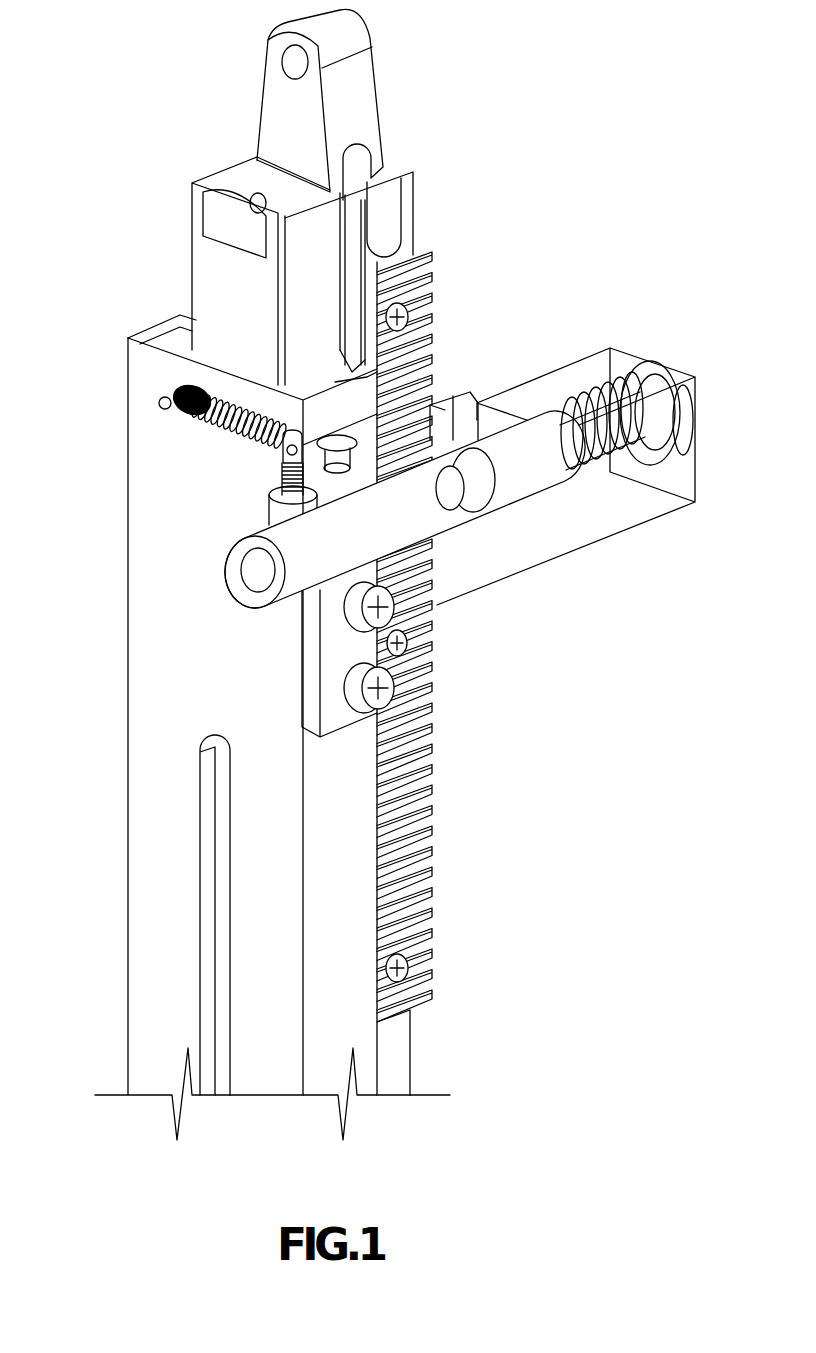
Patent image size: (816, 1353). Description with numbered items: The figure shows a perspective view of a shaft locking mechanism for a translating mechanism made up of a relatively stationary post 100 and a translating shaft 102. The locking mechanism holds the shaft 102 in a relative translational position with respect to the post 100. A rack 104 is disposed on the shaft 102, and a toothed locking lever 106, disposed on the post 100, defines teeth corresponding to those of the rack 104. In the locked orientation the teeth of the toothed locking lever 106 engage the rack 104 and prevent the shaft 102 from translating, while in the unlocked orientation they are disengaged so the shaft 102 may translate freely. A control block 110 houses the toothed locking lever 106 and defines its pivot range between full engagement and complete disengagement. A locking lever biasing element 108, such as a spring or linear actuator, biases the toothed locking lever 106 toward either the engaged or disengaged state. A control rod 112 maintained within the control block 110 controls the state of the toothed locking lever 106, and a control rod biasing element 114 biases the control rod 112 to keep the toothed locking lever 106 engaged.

The post 100 is at (140, 716).
The translating shaft 102 is at (360, 88).
The rack 104 is at (427, 768).
The toothed locking lever 106 is at (442, 430).
The locking lever biasing element 108 is at (198, 428).
The control block 110 is at (568, 377).
The control rod 112 is at (528, 497).
The control rod biasing element 114 is at (605, 470).